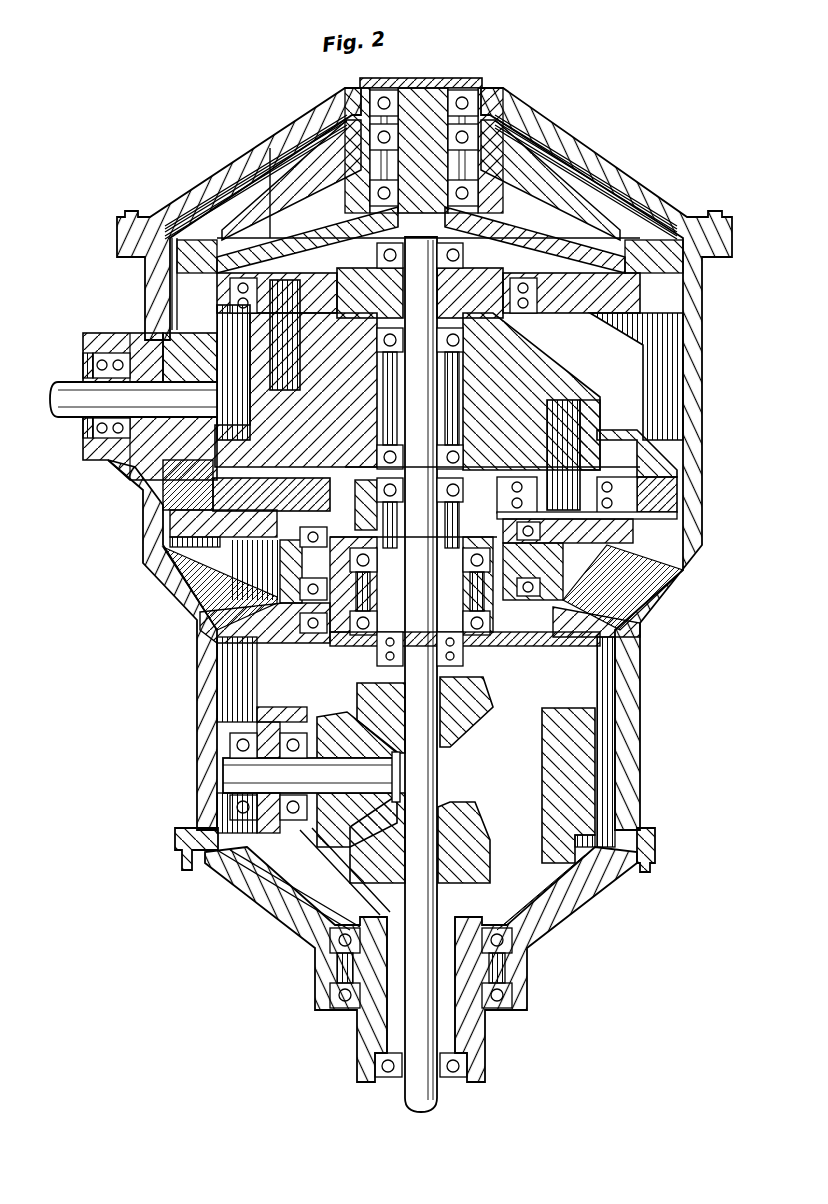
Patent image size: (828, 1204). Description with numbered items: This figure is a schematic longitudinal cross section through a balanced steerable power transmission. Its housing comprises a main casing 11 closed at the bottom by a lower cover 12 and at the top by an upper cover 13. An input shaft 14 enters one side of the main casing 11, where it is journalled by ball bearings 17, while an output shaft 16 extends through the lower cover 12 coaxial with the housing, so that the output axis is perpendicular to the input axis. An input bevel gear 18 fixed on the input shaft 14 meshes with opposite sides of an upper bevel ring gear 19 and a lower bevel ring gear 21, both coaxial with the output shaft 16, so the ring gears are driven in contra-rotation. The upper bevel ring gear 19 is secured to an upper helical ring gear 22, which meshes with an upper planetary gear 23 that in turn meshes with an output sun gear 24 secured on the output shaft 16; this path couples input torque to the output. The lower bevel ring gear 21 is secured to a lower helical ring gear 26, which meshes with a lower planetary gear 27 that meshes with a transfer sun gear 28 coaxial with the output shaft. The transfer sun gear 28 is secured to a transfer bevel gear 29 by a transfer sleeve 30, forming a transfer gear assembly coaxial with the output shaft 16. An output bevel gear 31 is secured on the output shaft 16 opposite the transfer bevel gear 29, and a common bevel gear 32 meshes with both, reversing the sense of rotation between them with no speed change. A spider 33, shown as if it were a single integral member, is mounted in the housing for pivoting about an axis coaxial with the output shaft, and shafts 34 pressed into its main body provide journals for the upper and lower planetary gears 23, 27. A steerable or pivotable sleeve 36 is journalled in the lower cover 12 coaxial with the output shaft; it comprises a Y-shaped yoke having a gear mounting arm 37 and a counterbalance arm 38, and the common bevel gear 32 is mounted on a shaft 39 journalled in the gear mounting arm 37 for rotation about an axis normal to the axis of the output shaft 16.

The main casing 11 is at (175, 590).
The lower cover 12 is at (590, 902).
The upper cover 13 is at (560, 137).
The input shaft 14 is at (62, 418).
The output shaft 16 is at (400, 1092).
The ball bearings 17 is at (82, 445).
The input bevel gear 18 is at (190, 330).
The upper bevel ring gear 19 is at (703, 340).
The lower bevel ring gear 21 is at (148, 482).
The upper helical ring gear 22 is at (172, 287).
The upper planetary gear 23 is at (217, 238).
The output sun gear 24 is at (480, 273).
The lower helical ring gear 26 is at (203, 533).
The lower planetary gear 27 is at (617, 507).
The transfer sun gear 28 is at (500, 540).
The transfer bevel gear 29 is at (473, 727).
The transfer sleeve 30 is at (463, 647).
The output bevel gear 31 is at (470, 813).
The common bevel gear 32 is at (330, 710).
The spider 33 is at (448, 88).
The shafts 34 is at (270, 185).
The steerable sleeve 36 is at (485, 1055).
The gear mounting arm 37 is at (267, 867).
The counterbalance arm 38 is at (593, 772).
The shaft 39 is at (217, 785).